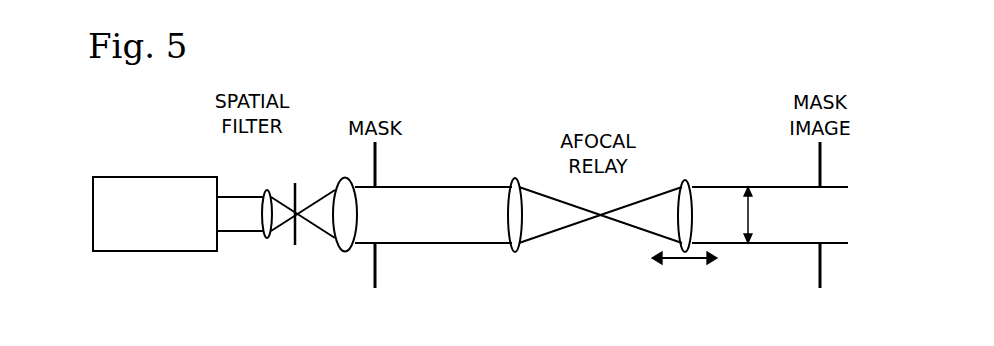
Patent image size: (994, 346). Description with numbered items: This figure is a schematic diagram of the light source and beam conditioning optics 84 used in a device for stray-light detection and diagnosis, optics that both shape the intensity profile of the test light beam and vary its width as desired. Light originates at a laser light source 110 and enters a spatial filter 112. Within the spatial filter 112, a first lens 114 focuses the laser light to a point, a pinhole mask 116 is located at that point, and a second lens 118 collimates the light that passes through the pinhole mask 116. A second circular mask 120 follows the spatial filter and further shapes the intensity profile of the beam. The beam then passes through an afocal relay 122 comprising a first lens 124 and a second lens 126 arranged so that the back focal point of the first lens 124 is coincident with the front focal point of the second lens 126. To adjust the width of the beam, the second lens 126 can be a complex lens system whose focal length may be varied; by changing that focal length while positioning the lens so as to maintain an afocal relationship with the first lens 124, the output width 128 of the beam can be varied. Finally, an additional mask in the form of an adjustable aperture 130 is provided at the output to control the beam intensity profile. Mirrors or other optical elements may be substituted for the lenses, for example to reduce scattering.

The optical system 84 is at (651, 75).
The laser light source 110 is at (170, 177).
The spatial filter 112 is at (297, 232).
The first lens 114 is at (266, 189).
The pinhole mask 116 is at (297, 230).
The second lens 118 is at (345, 177).
The second circular mask 120 is at (377, 272).
The afocal relay 122 is at (603, 223).
The first lens 124 is at (515, 178).
The second lens 126 is at (686, 180).
The output width 128 is at (750, 212).
The adjustable aperture 130 is at (818, 268).